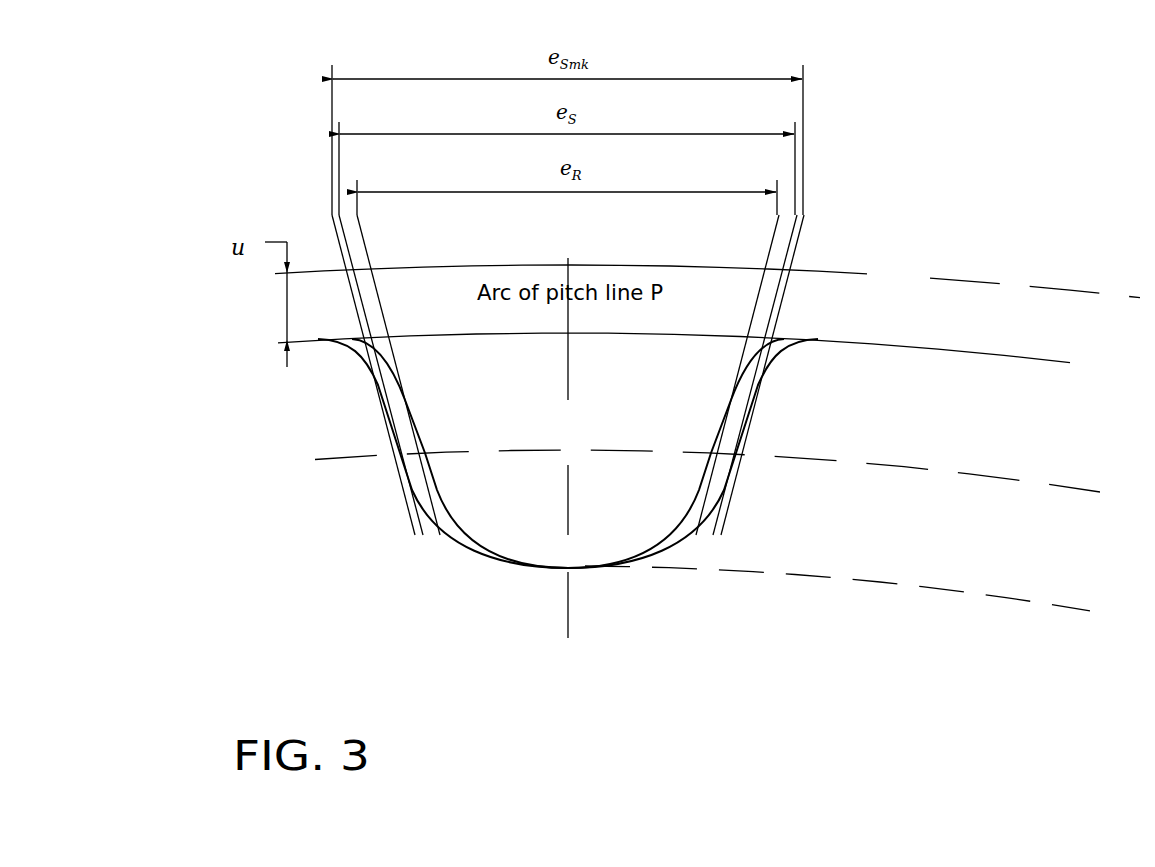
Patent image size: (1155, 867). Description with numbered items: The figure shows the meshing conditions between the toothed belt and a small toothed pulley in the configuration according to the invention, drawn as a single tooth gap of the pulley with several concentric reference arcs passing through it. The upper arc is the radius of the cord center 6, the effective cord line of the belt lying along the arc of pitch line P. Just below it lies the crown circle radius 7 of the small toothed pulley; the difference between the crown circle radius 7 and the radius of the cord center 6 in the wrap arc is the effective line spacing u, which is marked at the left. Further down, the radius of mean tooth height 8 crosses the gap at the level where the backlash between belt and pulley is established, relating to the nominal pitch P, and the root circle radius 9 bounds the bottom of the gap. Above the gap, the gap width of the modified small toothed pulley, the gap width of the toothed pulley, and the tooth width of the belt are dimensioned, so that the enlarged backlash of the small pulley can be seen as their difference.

The radius of the cord center 6 is at (947, 282).
The crown circle radius of the sprocket 7 is at (1039, 354).
The radius of mean tooth height 8 is at (1074, 490).
The root circle radius of the sprocket 9 is at (974, 597).